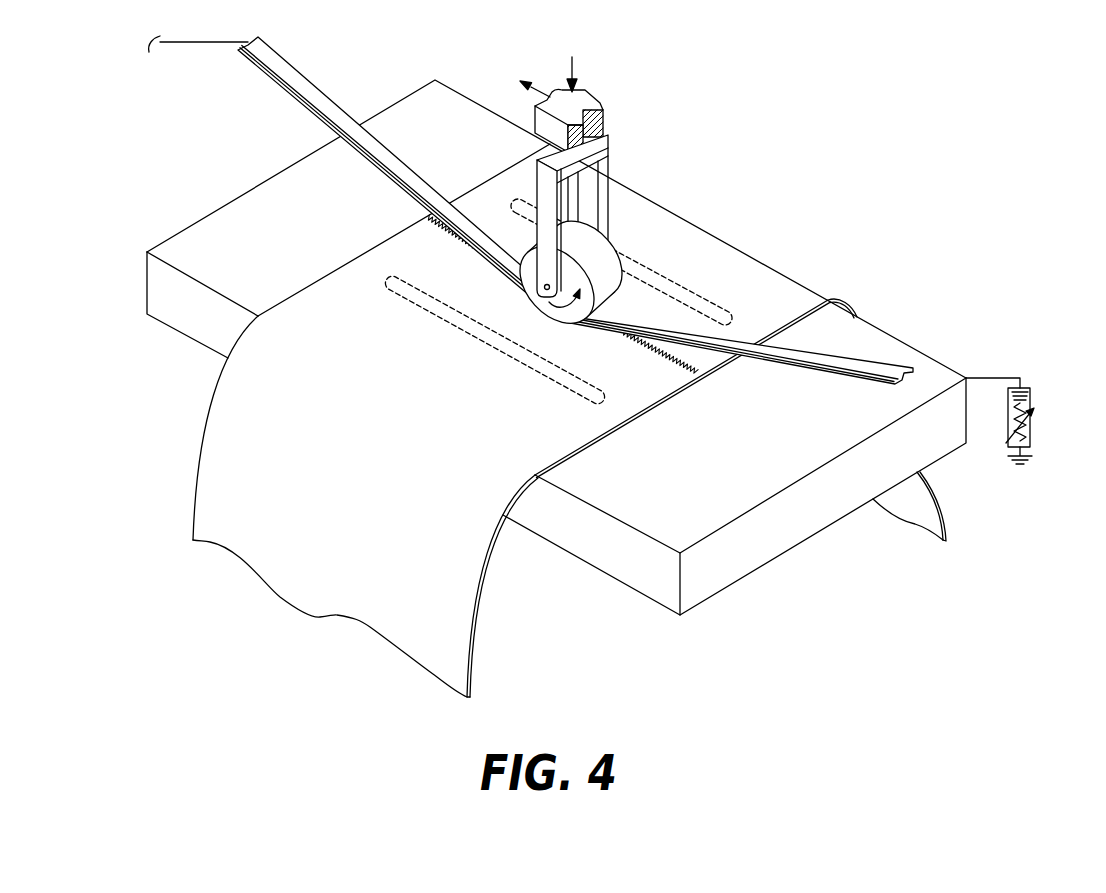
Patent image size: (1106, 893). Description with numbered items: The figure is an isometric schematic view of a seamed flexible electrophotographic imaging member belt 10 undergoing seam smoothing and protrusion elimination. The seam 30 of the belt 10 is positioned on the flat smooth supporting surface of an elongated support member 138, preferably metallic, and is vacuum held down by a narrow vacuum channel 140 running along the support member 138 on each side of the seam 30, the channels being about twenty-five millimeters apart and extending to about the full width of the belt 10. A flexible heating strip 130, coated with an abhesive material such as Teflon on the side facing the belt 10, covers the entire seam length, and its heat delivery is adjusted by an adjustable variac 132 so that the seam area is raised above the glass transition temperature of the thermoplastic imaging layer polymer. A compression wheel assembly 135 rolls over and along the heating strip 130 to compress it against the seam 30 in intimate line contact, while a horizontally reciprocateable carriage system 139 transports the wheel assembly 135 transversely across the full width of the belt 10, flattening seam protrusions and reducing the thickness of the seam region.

The imaging member belt 10 is at (177, 488).
The seam 30 is at (644, 346).
The heating strip 130 is at (393, 158).
The adjustable variac 132 is at (1032, 440).
The compression wheel assembly 135 is at (674, 244).
The support member 138 is at (722, 450).
The horizontally reciprocateable carriage system 139 is at (607, 107).
The vacuum channel 140 is at (455, 309).